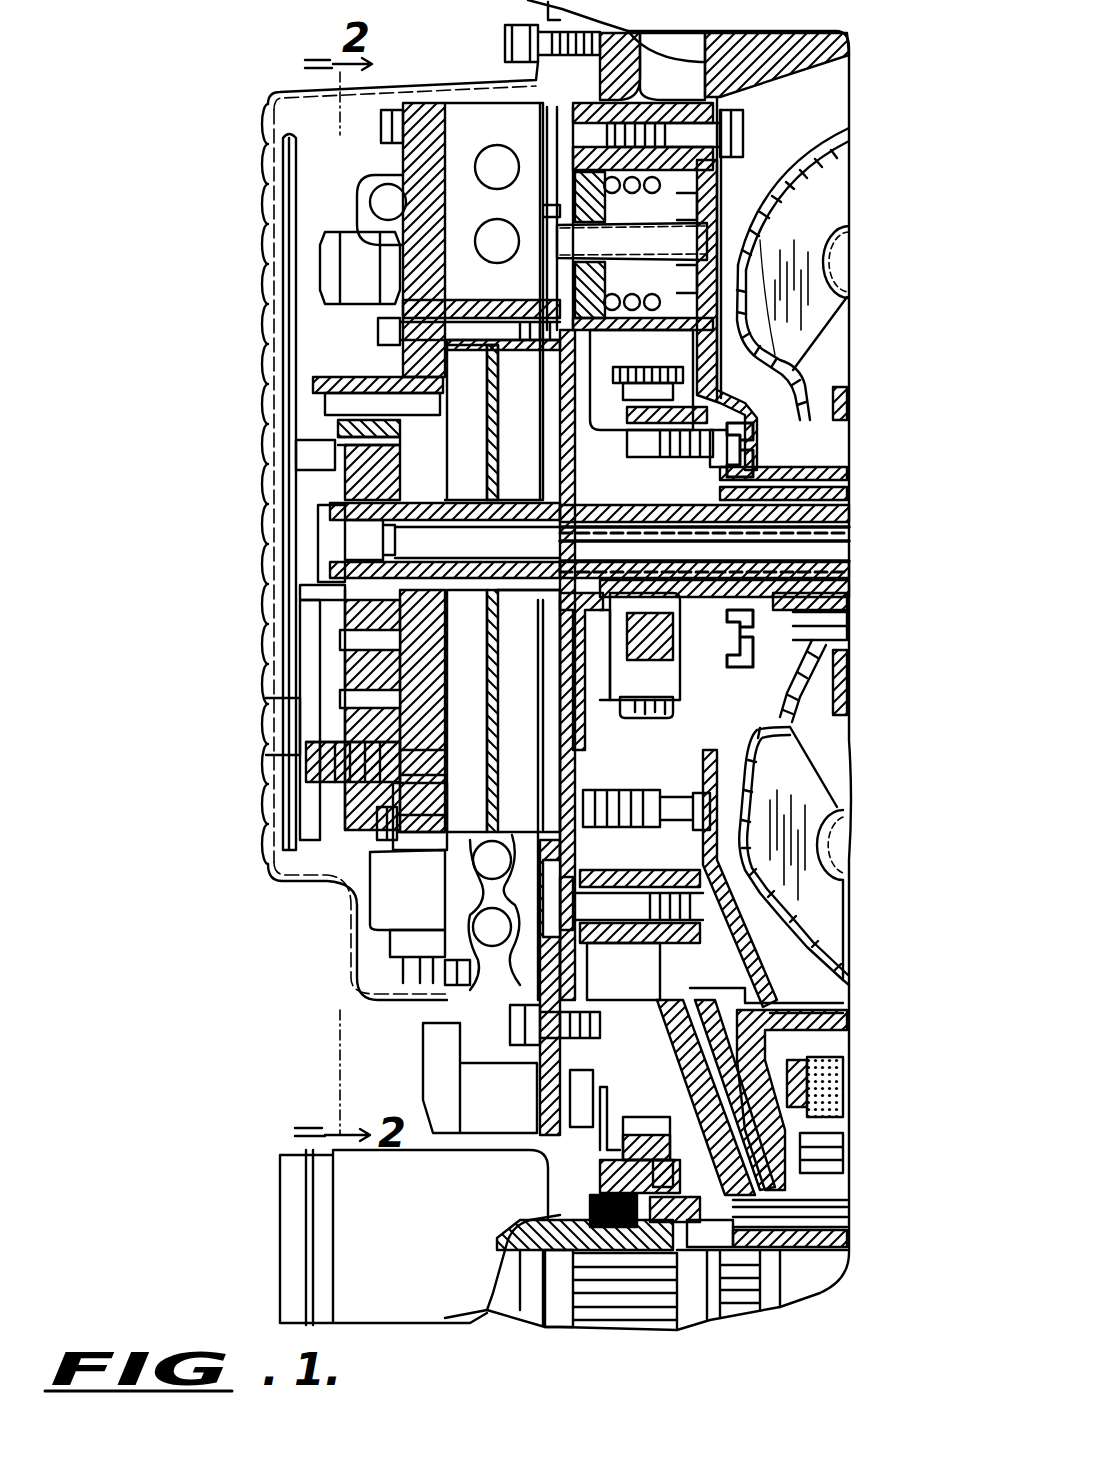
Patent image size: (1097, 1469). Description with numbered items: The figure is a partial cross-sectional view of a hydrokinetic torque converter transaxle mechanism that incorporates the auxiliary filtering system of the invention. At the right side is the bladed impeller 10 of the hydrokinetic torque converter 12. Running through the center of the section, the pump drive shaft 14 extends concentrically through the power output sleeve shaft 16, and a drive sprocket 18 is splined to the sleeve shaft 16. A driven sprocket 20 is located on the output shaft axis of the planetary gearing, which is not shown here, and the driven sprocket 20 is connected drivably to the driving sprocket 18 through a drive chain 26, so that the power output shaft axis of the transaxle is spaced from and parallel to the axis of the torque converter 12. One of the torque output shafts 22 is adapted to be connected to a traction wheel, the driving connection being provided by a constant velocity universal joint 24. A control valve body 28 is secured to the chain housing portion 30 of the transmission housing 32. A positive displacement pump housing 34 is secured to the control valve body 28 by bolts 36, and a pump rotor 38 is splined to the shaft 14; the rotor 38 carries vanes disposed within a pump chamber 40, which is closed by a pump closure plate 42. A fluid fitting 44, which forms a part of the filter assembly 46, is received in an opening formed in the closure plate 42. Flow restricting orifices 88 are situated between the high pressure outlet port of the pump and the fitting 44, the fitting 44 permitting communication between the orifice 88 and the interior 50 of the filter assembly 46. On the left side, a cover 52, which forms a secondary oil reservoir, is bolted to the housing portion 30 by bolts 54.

The bladed impeller 10 is at (795, 274).
The hydrokinetic torque converter 12 is at (795, 165).
The pump drive shaft 14 is at (482, 500).
The power output sleeve shaft 16 is at (529, 711).
The drive sprocket 18 is at (723, 523).
The driven sprocket 20 is at (630, 1122).
The torque output shaft 22 is at (602, 1300).
The constant velocity universal joint 24 is at (358, 1207).
The drive chain 26 is at (648, 385).
The control valve body 28 is at (475, 768).
The chain housing portion 30 is at (575, 400).
The transmission housing 32 is at (686, 100).
The positive displacement pump housing 34 is at (350, 705).
The bolts 36 is at (375, 828).
The pump rotor 38 is at (350, 590).
The pump chamber 40 is at (335, 455).
The pump closure plate 42 is at (330, 620).
The fluid fitting 44 is at (310, 470).
The filter assembly 46 is at (266, 238).
The interior of the assembly 50 is at (266, 695).
The cover 52 is at (352, 992).
The bolts 54 is at (505, 46).
The flow restricting orifices 88 is at (394, 460).